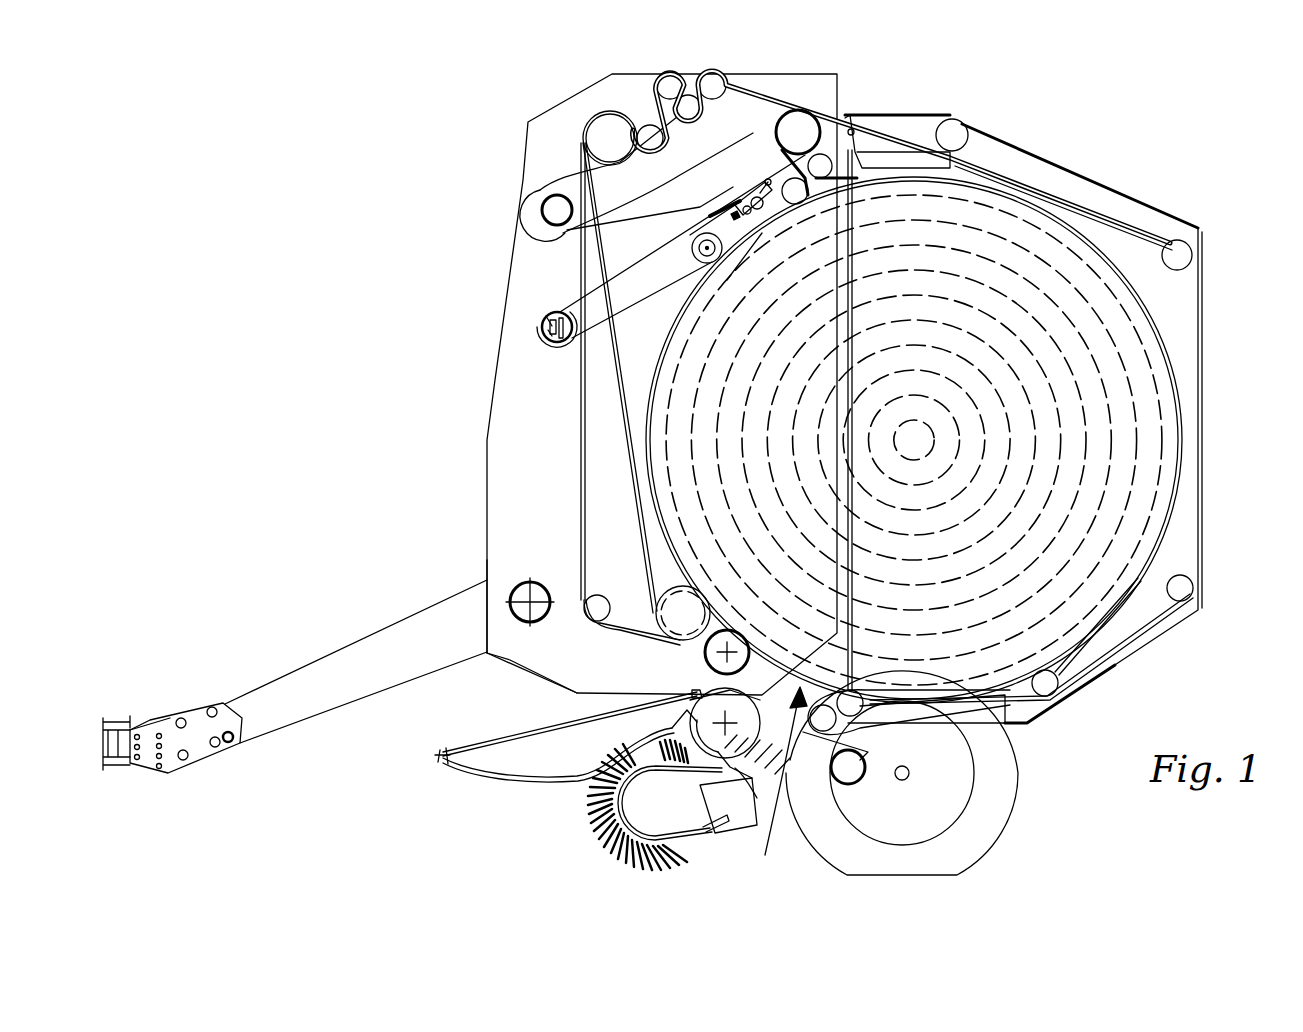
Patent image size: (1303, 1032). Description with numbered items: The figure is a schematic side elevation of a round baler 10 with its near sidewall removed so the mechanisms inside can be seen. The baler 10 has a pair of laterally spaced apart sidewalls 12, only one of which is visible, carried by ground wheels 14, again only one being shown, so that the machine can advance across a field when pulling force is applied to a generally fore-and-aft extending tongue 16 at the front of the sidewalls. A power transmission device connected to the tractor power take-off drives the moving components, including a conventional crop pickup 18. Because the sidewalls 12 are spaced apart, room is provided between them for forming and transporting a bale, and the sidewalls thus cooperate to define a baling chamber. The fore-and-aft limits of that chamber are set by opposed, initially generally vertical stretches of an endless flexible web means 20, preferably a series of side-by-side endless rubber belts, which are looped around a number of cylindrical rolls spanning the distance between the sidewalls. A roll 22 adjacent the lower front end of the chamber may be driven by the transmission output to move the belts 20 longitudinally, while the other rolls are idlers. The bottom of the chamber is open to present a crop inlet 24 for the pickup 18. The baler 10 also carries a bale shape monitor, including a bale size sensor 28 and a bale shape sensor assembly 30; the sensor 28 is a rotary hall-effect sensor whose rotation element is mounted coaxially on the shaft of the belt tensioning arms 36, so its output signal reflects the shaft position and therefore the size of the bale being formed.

The round baler 10 is at (1107, 163).
The sidewall 12 is at (1203, 400).
The ground wheel 14 is at (995, 815).
The tongue 16 is at (330, 665).
The crop pickup 18 is at (592, 830).
The endless flexible web means 20 is at (635, 512).
The roll 22 is at (702, 640).
The crop inlet 24 is at (779, 784).
The bale size sensor 28 is at (542, 320).
The bale shape sensor assembly 30 is at (732, 201).
The belt tensioning arms 36 is at (570, 302).